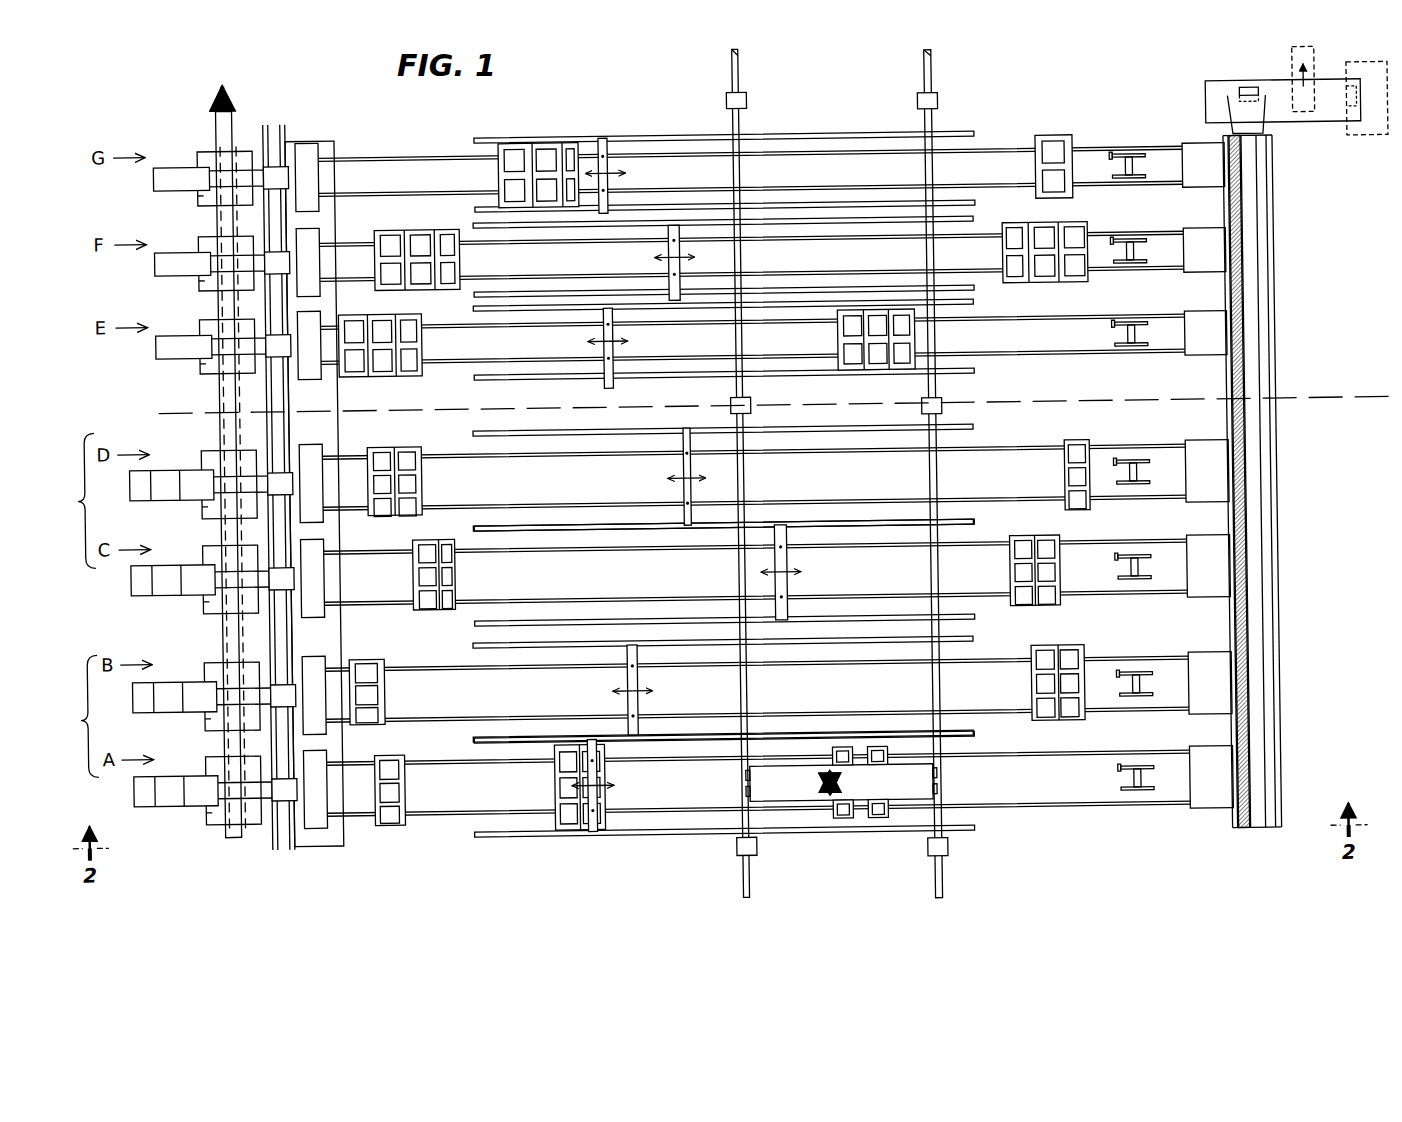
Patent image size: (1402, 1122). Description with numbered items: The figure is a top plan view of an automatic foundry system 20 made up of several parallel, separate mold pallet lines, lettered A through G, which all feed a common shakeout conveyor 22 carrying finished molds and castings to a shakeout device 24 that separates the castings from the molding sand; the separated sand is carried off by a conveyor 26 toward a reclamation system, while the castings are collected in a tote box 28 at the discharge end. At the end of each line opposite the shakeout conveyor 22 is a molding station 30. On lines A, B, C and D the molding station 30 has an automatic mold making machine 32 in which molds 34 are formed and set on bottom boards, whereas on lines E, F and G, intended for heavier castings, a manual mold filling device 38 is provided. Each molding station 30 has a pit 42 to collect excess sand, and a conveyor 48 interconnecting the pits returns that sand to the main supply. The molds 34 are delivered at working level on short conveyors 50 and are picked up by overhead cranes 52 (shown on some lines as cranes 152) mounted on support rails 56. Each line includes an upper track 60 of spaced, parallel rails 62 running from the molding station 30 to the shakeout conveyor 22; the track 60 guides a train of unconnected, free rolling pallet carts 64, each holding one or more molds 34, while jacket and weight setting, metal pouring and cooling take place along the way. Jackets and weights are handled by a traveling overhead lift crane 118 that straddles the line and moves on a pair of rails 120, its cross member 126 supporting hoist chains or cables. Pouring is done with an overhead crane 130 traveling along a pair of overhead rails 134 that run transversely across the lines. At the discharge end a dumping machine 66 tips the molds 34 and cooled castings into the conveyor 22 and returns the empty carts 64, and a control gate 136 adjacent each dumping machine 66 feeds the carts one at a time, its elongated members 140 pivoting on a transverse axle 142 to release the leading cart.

The automatic foundry system 20 is at (1318, 525).
The shakeout conveyor 22 is at (1252, 634).
The shakeout device 24 is at (1298, 125).
The conveyor 26 is at (1286, 72).
The tote box 28 is at (1362, 162).
The molding station 30 is at (192, 143).
The automatic mold making machine 32 is at (174, 638).
The molds 34 is at (556, 786).
The manual mold filling device 38 is at (182, 263).
The pit 42 is at (204, 805).
The conveyor 48 is at (232, 835).
The short conveyor 50 is at (229, 173).
The overhead crane 52 is at (278, 331).
The carriage 152 is at (283, 684).
The support rails 56 is at (278, 844).
The upper track 60 is at (754, 481).
The conveyor rails 62 is at (356, 807).
The pallet carts 64 is at (726, 456).
The dumping machine 66 is at (1205, 756).
The traveling overhead lift crane 118 is at (613, 792).
The rails 120 is at (667, 820).
The cross member 126 is at (613, 769).
The overhead crane 130 is at (916, 784).
The overhead rails 134 is at (920, 480).
The control gate 136 is at (1116, 166).
The elongated members 140 is at (1150, 471).
The transverse axle 142 is at (1144, 798).